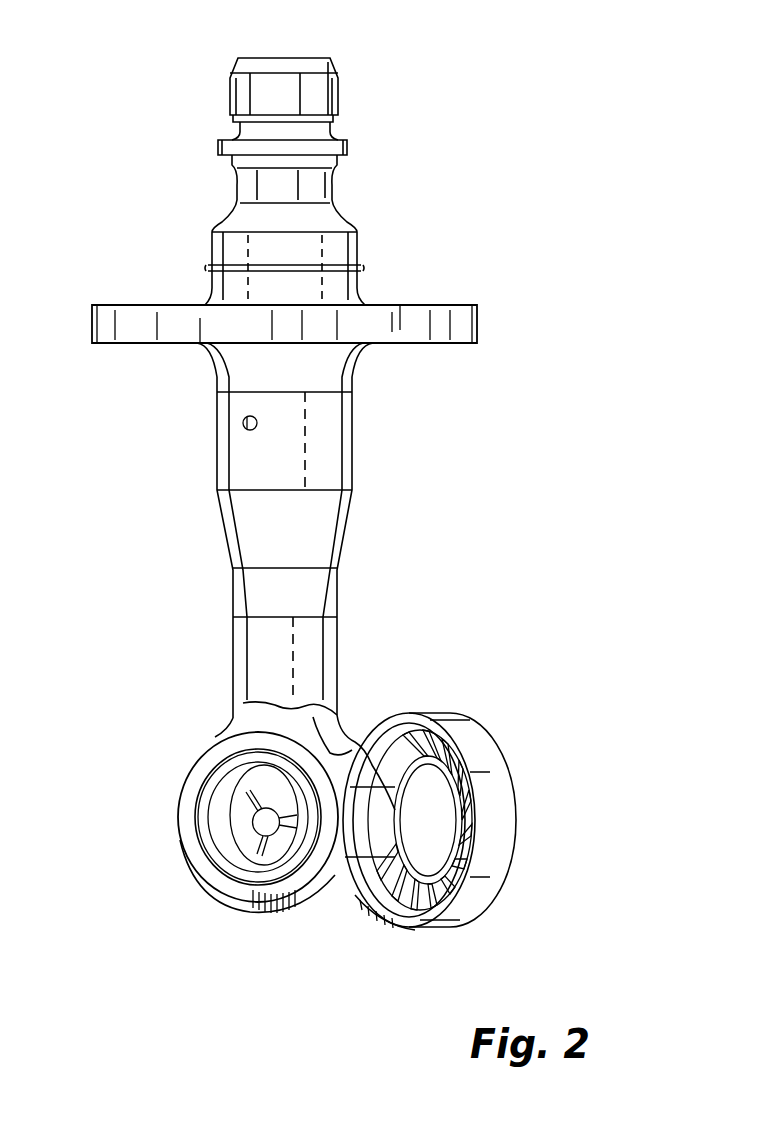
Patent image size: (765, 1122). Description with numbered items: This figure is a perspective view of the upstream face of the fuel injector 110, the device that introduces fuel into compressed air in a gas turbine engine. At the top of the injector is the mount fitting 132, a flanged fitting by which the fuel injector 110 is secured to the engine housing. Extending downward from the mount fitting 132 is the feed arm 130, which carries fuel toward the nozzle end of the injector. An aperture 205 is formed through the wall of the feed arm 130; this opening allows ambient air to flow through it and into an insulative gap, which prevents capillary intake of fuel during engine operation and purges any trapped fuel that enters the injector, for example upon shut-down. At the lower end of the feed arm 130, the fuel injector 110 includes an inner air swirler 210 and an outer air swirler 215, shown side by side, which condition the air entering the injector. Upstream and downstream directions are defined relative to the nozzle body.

The fuel injector 110 is at (121, 108).
The mount fitting 132 is at (120, 320).
The feed arm 130 is at (332, 522).
The aperture 205 is at (245, 420).
The inner air swirler 210 is at (235, 827).
The outer air swirler 215 is at (442, 750).